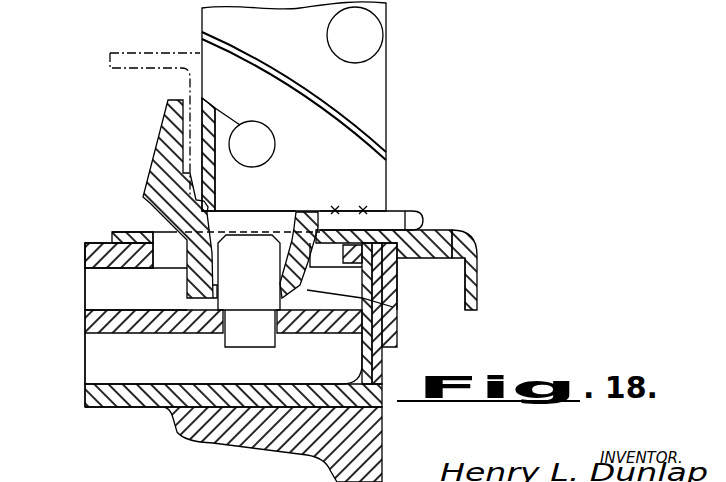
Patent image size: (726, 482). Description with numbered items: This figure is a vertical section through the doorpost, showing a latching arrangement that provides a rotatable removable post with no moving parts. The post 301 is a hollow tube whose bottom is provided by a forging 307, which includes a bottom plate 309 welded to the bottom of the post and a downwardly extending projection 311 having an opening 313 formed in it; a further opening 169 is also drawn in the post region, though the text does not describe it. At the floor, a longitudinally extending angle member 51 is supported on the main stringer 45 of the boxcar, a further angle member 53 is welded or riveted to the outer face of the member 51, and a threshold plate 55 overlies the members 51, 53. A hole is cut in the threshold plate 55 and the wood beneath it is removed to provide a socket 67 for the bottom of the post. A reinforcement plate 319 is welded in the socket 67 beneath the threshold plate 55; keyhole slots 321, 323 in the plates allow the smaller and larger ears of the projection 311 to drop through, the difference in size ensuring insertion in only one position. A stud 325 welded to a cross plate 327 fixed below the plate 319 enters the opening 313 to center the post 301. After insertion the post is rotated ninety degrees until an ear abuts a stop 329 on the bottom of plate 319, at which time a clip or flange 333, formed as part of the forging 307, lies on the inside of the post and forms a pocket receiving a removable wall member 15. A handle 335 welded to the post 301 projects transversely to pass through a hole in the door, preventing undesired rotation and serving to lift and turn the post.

The removable wall member 15 is at (128, 74).
The main stringer 45 is at (215, 447).
The angle member 51 is at (118, 409).
The angle member 53 is at (428, 258).
The threshold plate 55 is at (452, 231).
The socket 67 is at (100, 384).
The bore 169 is at (272, 109).
The post 301 is at (386, 118).
The forging 307 is at (406, 207).
The bottom plate 309 is at (263, 197).
The downwardly extending projection 311 is at (252, 326).
The opening 313 is at (249, 272).
The reinforcement plate 319 is at (95, 254).
The slot 321 is at (176, 266).
The slot 323 is at (323, 247).
The stud 325 is at (255, 344).
The cross plate 327 is at (328, 313).
The stop 329 is at (386, 309).
The clip or flange 333 is at (169, 131).
The handle 335 is at (383, 35).